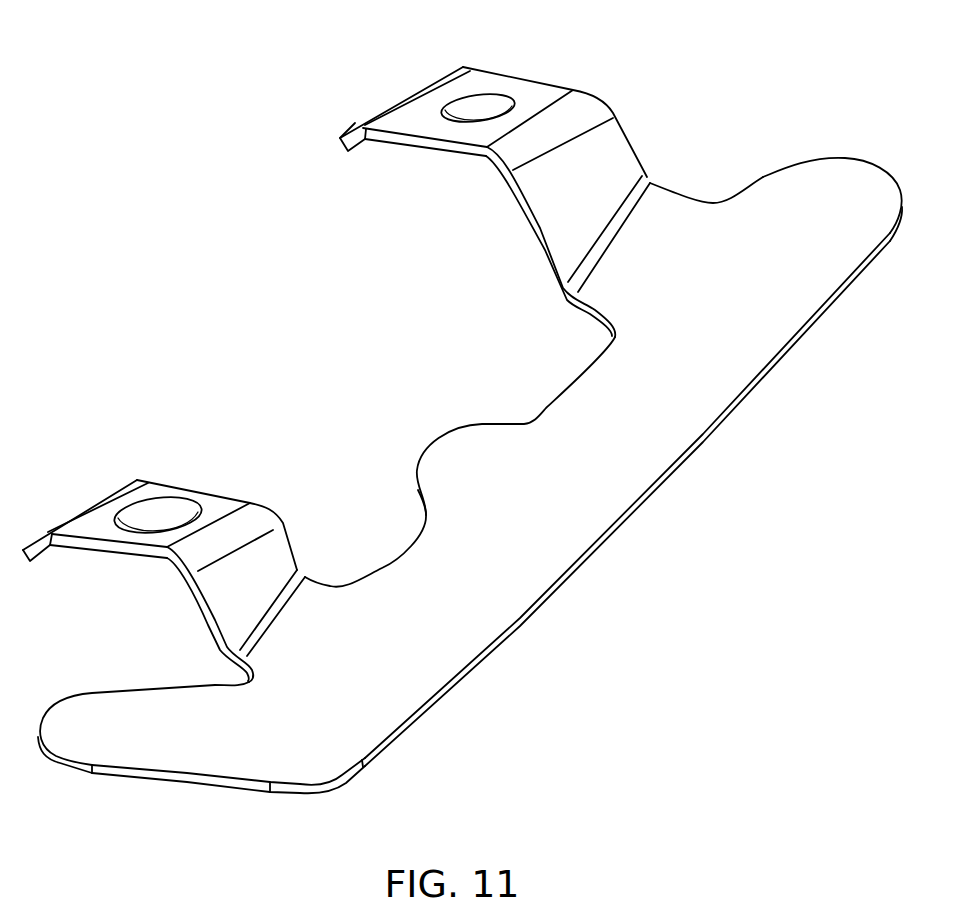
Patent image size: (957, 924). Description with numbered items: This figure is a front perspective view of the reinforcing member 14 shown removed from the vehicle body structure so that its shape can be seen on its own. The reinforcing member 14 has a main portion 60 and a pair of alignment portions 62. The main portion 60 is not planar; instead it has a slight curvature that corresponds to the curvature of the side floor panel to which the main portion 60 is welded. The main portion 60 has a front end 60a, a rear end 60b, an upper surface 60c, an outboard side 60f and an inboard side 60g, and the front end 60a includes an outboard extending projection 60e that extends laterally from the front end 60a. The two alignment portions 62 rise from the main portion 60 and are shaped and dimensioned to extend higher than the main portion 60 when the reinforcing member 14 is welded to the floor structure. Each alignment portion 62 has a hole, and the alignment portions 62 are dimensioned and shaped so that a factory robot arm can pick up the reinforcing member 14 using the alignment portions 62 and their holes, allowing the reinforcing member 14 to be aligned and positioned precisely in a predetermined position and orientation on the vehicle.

The reinforcing member 14 is at (201, 281).
The main portion 60 is at (402, 101).
The alignment portions 62 is at (528, 93).
The front end 60a is at (197, 738).
The rear end 60b is at (840, 195).
The upper surface 60c is at (723, 260).
The outboard extending projection 60e is at (82, 722).
The outboard side 60f is at (453, 453).
The inboard side 60g is at (655, 490).